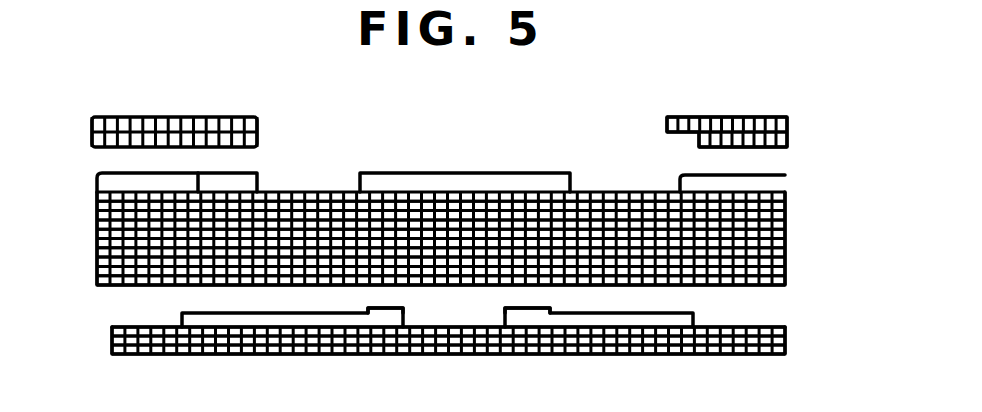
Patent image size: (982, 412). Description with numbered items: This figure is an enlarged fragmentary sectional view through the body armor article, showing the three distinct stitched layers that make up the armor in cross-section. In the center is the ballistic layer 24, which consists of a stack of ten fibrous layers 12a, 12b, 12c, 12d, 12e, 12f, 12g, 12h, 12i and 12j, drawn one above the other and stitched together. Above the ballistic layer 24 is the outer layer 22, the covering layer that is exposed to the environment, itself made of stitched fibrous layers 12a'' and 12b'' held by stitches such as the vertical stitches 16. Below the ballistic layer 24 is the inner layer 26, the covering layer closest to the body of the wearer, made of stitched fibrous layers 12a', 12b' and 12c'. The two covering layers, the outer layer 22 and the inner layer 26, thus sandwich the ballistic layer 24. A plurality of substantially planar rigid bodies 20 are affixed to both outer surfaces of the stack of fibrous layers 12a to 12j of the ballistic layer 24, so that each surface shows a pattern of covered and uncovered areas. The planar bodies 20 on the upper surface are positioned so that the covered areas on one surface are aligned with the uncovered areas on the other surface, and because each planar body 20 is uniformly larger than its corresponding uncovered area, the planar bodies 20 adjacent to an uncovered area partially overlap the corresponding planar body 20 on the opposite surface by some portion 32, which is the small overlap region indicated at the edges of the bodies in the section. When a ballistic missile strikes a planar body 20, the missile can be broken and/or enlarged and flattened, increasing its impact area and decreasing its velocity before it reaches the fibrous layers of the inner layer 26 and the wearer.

The fibrous layer 12a is at (483, 183).
The fibrous layer 12b is at (417, 187).
The fibrous layer 12c is at (486, 211).
The fibrous layer 12d is at (98, 223).
The fibrous layer 12e is at (787, 232).
The fibrous layer 12f is at (98, 243).
The fibrous layer 12g is at (787, 251).
The fibrous layer 12h is at (98, 262).
The fibrous layer 12i is at (787, 270).
The fibrous layer 12j is at (98, 280).
The lower substrate layer 12a' is at (490, 338).
The lower substrate layer 12b' is at (422, 364).
The lower substrate layer 12c' is at (487, 364).
The upper substrate layer 12a'' is at (766, 108).
The upper substrate layer 12b'' is at (786, 137).
The vertical stitches 16 is at (705, 117).
The planar body 20 is at (690, 175).
The outer layer 22 is at (104, 129).
The ballistic layer 24 is at (790, 286).
The inner layer 26 is at (750, 355).
The portion of overlap 32 is at (200, 177).